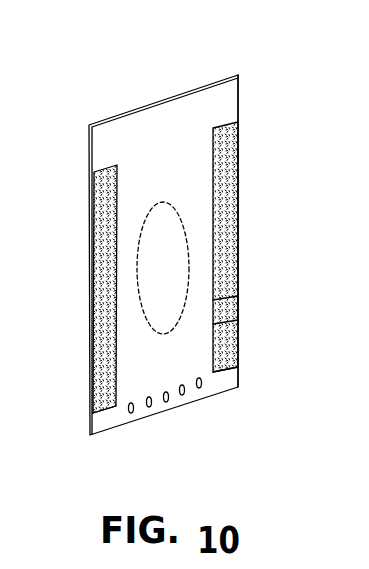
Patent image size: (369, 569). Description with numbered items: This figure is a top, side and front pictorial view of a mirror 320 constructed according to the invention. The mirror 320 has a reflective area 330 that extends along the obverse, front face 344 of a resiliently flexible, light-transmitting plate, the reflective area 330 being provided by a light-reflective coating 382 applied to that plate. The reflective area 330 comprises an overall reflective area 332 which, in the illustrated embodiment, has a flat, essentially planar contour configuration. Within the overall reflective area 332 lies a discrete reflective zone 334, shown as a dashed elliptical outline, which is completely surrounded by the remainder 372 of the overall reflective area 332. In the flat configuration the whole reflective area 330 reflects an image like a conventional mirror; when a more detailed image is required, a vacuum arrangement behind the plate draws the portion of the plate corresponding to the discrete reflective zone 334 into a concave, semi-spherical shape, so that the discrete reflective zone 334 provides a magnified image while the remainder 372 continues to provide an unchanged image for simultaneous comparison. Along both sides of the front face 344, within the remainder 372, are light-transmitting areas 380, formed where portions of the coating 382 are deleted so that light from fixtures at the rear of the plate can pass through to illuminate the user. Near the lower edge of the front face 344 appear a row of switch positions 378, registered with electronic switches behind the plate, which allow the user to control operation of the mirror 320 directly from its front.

The mirror 320 is at (156, 91).
The reflective area 330 is at (148, 151).
The front face 344 is at (228, 103).
The overall reflective area 332 is at (195, 157).
The light-reflective coating 382 is at (135, 185).
The discrete reflective zone 334 is at (172, 245).
The remainder of the overall reflective area 372 is at (200, 307).
The light-transmitting areas 380 is at (100, 330).
The switch positions 378 is at (185, 398).